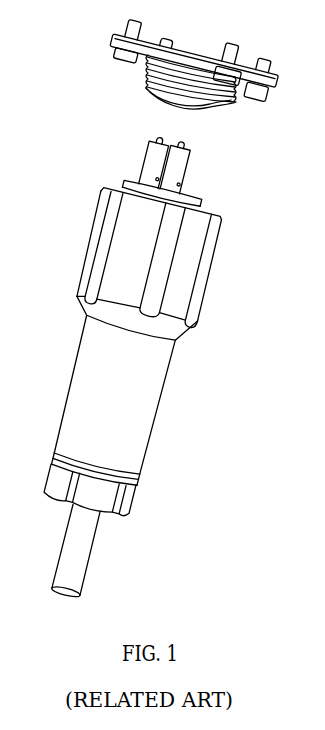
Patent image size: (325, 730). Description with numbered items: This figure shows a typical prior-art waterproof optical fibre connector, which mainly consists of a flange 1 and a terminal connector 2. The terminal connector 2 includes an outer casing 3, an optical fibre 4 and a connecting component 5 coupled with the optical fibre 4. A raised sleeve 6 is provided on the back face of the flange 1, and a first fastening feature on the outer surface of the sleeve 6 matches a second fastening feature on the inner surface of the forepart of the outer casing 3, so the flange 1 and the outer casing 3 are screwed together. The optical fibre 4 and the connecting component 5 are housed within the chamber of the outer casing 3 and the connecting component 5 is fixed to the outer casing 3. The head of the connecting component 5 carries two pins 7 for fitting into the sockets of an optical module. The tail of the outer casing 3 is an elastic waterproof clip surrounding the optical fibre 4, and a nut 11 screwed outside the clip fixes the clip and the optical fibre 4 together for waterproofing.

The flange 1 is at (270, 78).
The terminal connector 2 is at (144, 365).
The outer casing 3 is at (192, 317).
The optical fibre 4 is at (91, 551).
The connecting component 5 is at (180, 173).
The sleeve 6 is at (142, 70).
The pins 7 is at (188, 142).
The nut 11 is at (57, 482).